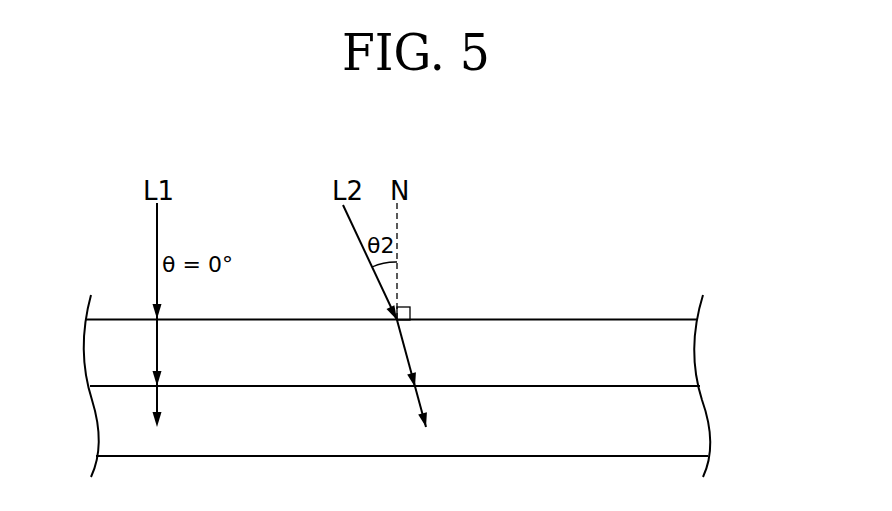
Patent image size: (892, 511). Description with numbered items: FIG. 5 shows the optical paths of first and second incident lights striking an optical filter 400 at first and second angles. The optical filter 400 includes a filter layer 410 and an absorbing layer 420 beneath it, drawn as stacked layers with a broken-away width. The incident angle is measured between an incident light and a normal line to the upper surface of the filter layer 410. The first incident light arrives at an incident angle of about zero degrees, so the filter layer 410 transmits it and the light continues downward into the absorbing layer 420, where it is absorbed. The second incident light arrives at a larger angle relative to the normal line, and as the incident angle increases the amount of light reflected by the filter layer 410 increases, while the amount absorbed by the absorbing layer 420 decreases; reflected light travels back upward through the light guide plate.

The optical filter 400 is at (605, 172).
The filter layer 410 is at (685, 352).
The absorbing layer 420 is at (700, 423).